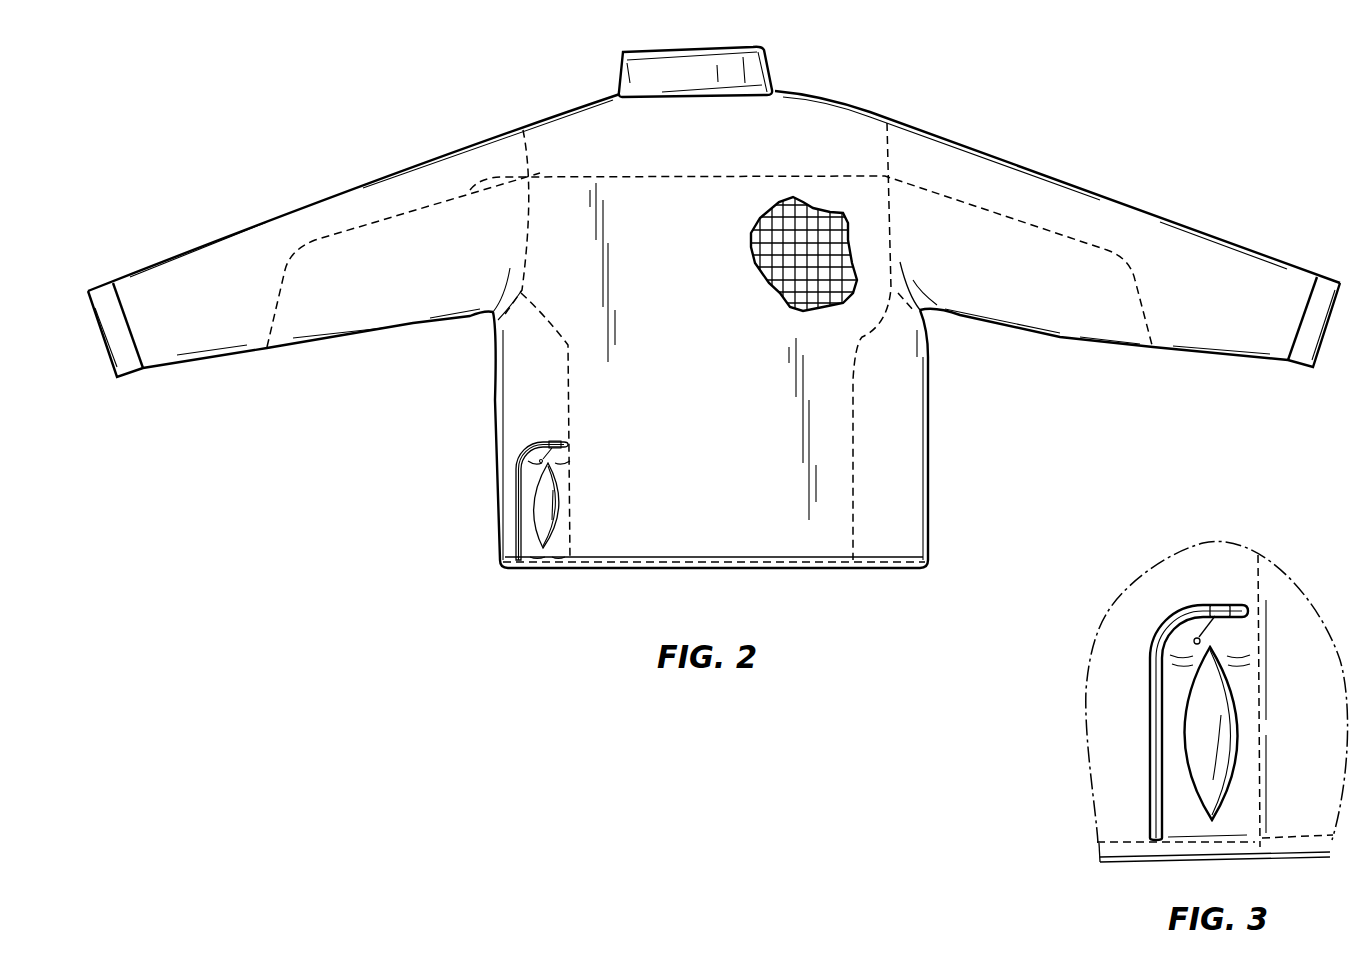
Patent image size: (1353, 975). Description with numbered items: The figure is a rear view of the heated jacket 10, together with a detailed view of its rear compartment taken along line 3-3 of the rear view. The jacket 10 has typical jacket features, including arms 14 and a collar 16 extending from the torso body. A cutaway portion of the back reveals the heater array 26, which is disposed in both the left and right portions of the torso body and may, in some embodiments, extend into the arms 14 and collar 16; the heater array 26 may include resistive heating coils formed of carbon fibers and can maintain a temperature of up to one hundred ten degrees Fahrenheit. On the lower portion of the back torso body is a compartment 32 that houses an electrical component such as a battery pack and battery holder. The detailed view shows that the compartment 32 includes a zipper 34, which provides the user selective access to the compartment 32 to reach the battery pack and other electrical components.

In FIG. 2, the heated jacket 10 is at (960, 72).
In FIG. 2, the arms 14 is at (305, 218).
In FIG. 2, the collar 16 is at (770, 70).
In FIG. 2, the heater array 26 is at (820, 238).
In FIG. 2, the compartment 32 is at (524, 522).
In FIG. 3, the compartment 32 is at (1136, 727).
In FIG. 3, the zipper 34 is at (1227, 607).
In FIG. 2, the section view indicator 3- 3 is at (535, 593).